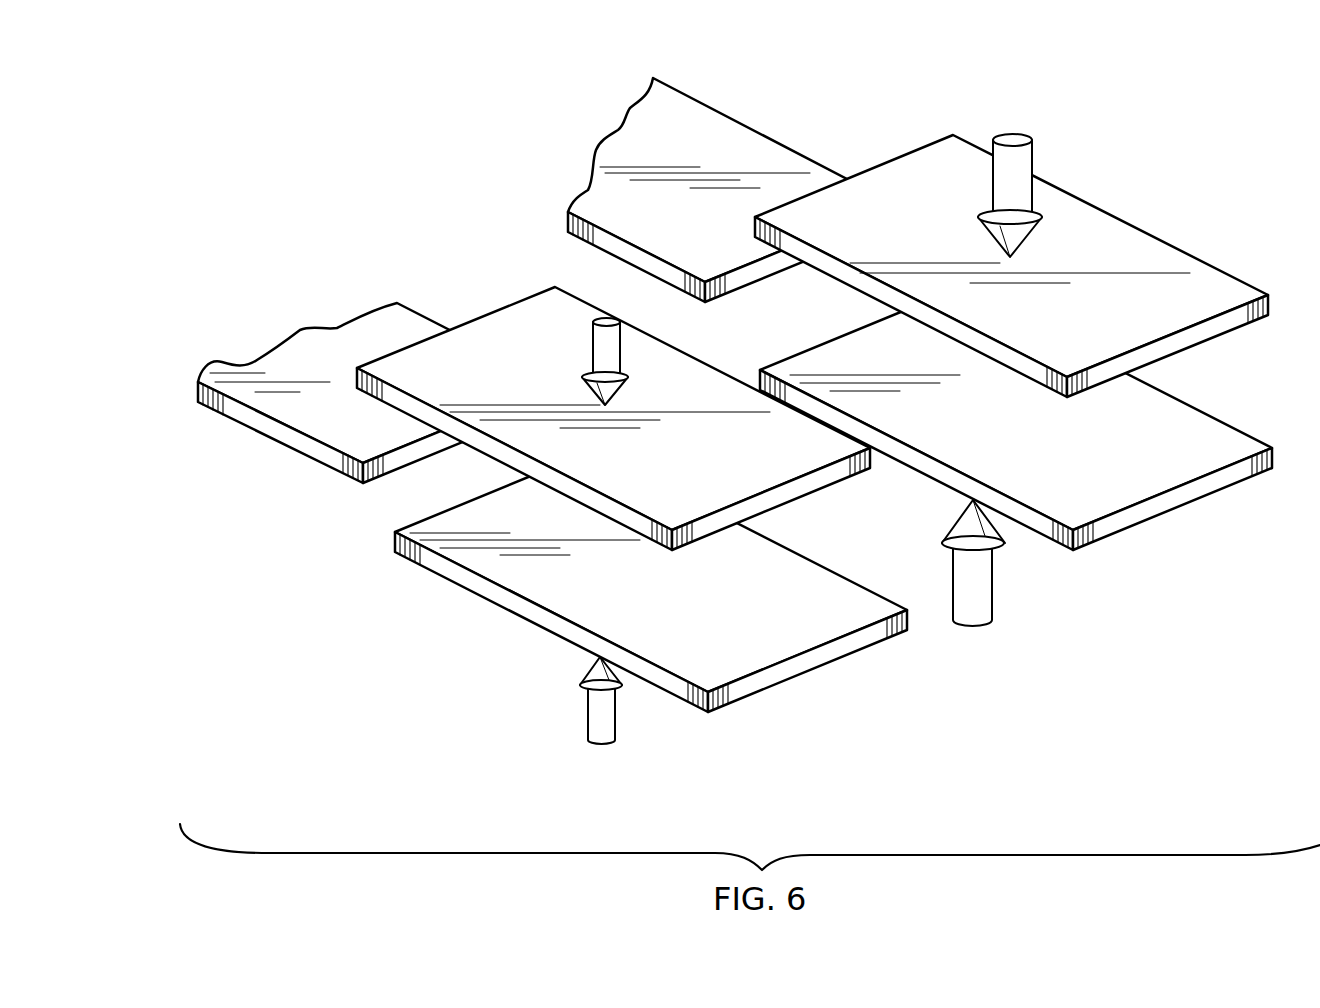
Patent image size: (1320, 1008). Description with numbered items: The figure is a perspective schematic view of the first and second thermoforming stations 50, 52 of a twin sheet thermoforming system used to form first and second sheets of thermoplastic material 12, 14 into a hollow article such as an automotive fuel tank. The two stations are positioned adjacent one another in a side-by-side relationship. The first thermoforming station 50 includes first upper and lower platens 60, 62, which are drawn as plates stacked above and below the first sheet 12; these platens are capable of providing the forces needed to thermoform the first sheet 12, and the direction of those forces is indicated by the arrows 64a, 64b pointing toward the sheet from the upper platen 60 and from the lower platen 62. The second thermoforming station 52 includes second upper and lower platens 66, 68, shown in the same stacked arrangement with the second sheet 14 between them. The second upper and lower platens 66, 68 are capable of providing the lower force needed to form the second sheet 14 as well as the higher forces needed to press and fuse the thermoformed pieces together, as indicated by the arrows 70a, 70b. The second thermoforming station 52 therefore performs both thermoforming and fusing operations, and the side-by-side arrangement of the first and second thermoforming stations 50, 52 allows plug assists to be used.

The first sheet of thermoplastic material 12 is at (273, 428).
The second sheet of thermoplastic material 14 is at (682, 93).
The first thermoforming station 50 is at (461, 262).
The second thermoforming station 52 is at (893, 136).
The first upper platen 60 is at (800, 498).
The first lower platen 62 is at (790, 679).
The arrow 64a is at (592, 318).
The arrow 64b is at (588, 721).
The second upper platen 66 is at (1180, 245).
The second lower platen 68 is at (1207, 408).
The arrow 70a is at (1032, 165).
The arrow 70b is at (993, 588).